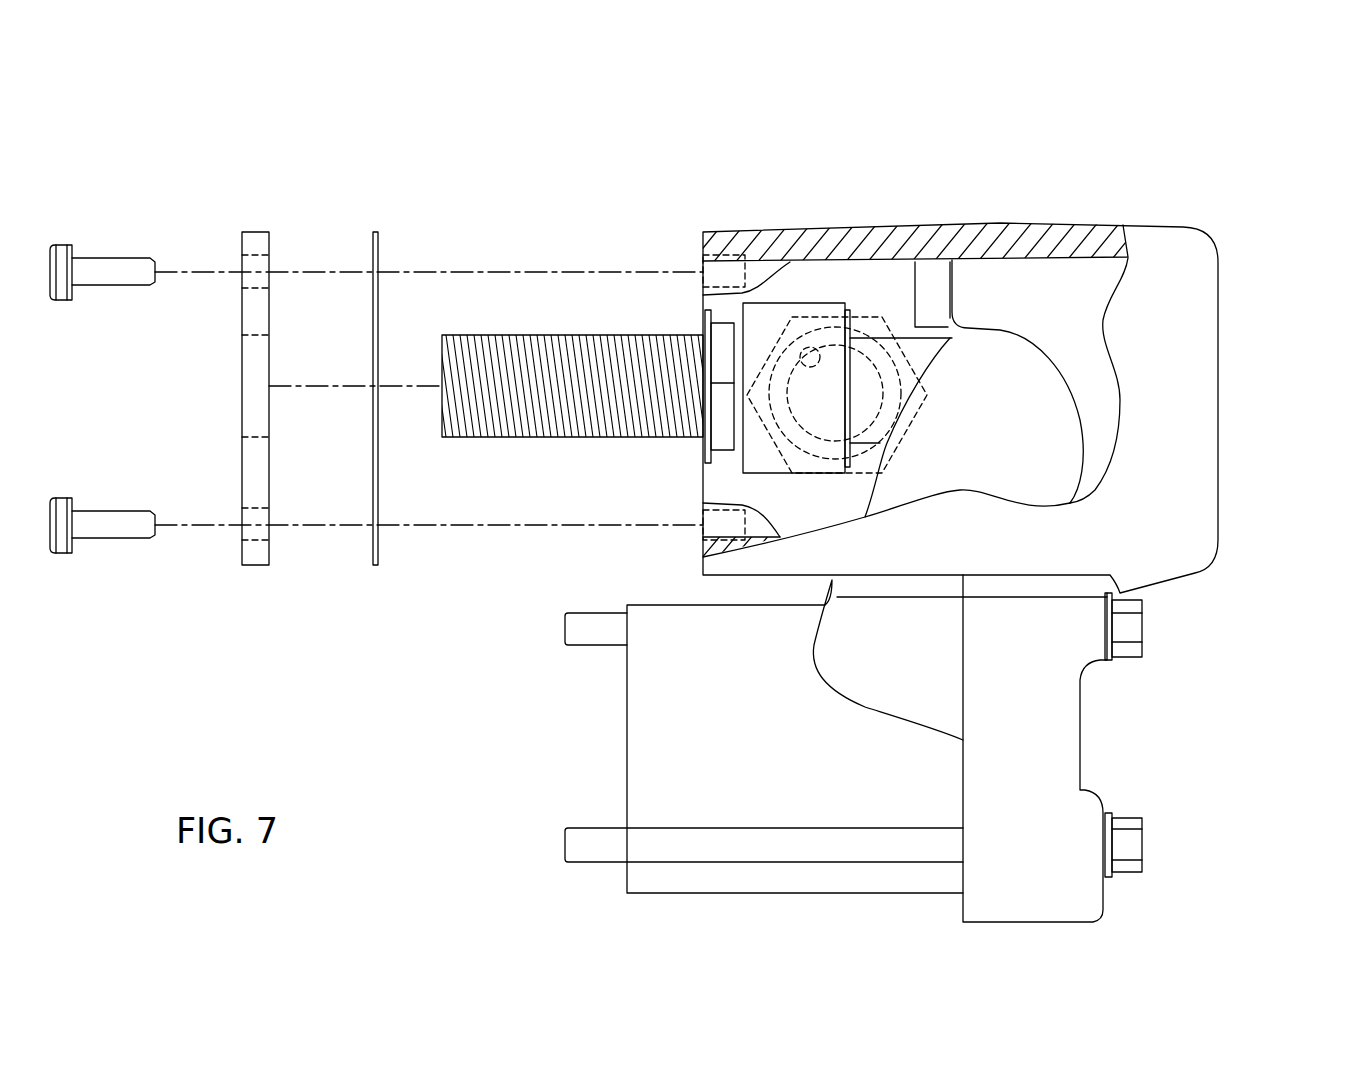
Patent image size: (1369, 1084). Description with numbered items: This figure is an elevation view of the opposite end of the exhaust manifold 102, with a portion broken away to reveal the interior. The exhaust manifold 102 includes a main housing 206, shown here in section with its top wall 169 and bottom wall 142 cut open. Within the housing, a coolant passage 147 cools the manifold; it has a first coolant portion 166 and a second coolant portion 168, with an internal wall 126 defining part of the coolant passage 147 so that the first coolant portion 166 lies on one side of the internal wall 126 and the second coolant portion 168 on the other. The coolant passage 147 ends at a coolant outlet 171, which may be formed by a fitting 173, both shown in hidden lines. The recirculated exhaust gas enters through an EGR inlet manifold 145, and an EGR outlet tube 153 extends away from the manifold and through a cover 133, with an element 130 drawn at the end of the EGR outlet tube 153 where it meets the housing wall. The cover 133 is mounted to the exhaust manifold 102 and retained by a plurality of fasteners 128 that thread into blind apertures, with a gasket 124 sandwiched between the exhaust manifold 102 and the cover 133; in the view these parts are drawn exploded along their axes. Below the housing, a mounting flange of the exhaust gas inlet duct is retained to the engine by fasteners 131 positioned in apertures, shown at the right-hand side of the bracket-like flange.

The exhaust manifold 102 is at (1102, 175).
The gasket 124 is at (378, 240).
The internal wall 126 is at (952, 285).
The fasteners 128 is at (110, 287).
The washer 130 is at (707, 328).
The fasteners 131 is at (1143, 613).
The cover 133 is at (270, 238).
The bottom wall 142 is at (703, 573).
The EGR inlet manifold 145 is at (734, 462).
The coolant passage 147 is at (742, 486).
The EGR outlet tube 153 is at (537, 335).
The first coolant portion 166 is at (727, 312).
The second coolant portion 168 is at (1050, 290).
The top wall 169 is at (737, 227).
The coolant outlet 171 is at (788, 312).
The fitting 173 is at (868, 313).
The main housing 206 is at (1236, 270).